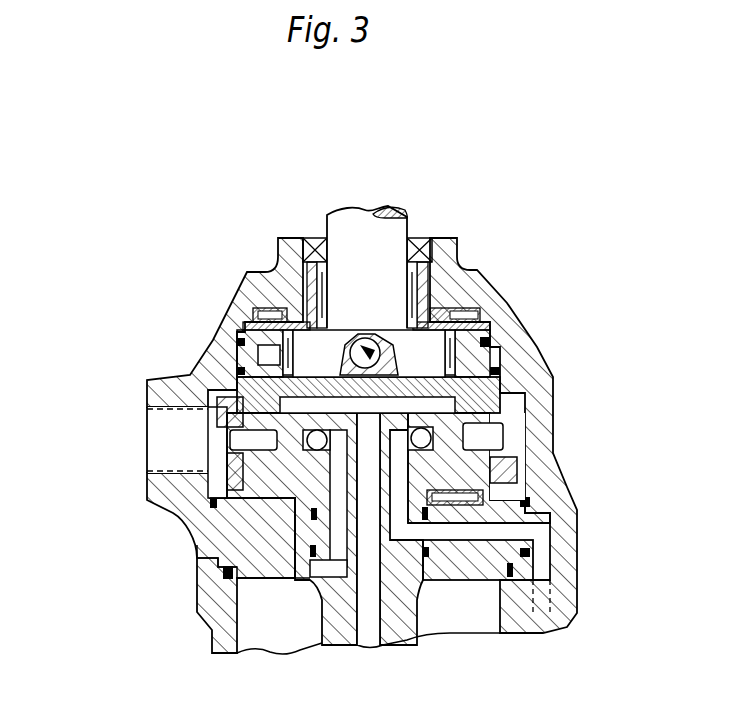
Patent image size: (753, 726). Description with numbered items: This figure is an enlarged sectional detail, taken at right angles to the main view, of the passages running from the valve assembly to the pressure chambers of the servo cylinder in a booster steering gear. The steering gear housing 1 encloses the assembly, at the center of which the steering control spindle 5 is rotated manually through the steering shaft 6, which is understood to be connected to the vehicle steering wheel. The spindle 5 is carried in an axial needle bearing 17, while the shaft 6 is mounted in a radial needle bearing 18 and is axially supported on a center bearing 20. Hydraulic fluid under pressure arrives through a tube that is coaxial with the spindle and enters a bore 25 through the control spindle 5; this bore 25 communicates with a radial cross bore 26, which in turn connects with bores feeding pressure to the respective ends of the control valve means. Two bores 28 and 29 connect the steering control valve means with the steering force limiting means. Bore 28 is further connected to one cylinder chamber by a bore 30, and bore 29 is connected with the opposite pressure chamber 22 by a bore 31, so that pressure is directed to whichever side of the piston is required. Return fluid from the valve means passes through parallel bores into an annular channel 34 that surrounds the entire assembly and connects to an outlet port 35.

The steering gear housing 1 is at (223, 592).
The steering control spindle 5 is at (405, 610).
The steering shaft 6 is at (343, 262).
The axial needle bearing 17 is at (478, 318).
The radial needle bearing 18 is at (243, 337).
The center bearing 20 is at (371, 348).
The pressure chamber 22 is at (295, 620).
The bore 25 is at (368, 482).
The radial cross bore 26 is at (465, 405).
The bore 28 is at (428, 437).
The bore 29 is at (230, 420).
The bore 30 is at (400, 510).
The bore 31 is at (340, 518).
The annular channel 34 is at (217, 465).
The outlet port 35 is at (182, 435).